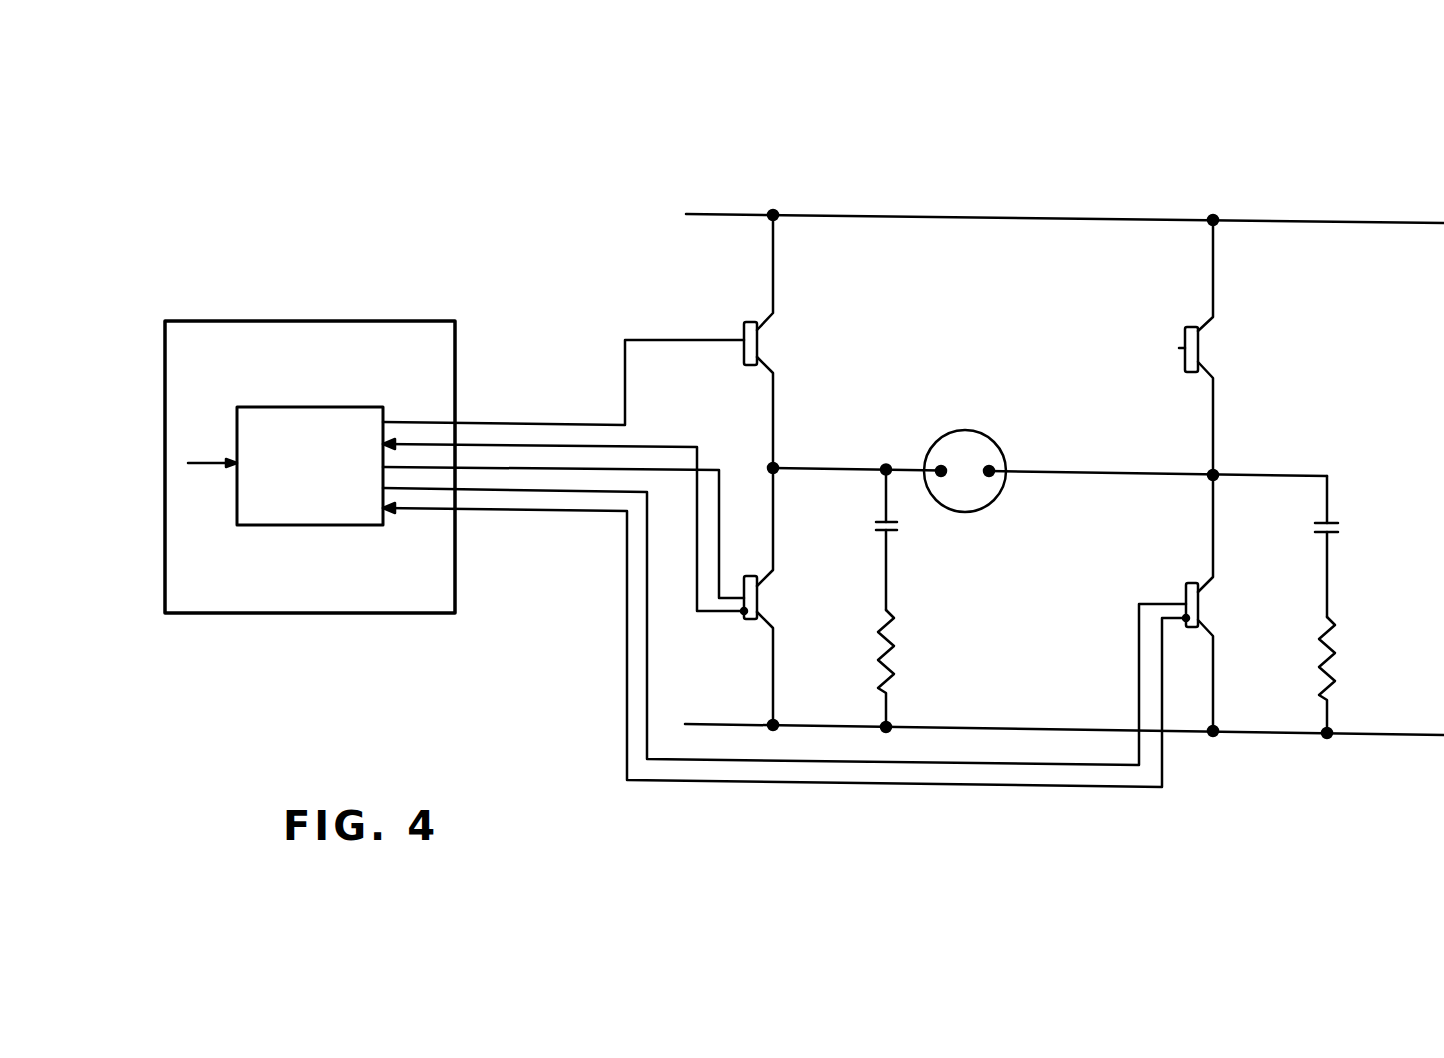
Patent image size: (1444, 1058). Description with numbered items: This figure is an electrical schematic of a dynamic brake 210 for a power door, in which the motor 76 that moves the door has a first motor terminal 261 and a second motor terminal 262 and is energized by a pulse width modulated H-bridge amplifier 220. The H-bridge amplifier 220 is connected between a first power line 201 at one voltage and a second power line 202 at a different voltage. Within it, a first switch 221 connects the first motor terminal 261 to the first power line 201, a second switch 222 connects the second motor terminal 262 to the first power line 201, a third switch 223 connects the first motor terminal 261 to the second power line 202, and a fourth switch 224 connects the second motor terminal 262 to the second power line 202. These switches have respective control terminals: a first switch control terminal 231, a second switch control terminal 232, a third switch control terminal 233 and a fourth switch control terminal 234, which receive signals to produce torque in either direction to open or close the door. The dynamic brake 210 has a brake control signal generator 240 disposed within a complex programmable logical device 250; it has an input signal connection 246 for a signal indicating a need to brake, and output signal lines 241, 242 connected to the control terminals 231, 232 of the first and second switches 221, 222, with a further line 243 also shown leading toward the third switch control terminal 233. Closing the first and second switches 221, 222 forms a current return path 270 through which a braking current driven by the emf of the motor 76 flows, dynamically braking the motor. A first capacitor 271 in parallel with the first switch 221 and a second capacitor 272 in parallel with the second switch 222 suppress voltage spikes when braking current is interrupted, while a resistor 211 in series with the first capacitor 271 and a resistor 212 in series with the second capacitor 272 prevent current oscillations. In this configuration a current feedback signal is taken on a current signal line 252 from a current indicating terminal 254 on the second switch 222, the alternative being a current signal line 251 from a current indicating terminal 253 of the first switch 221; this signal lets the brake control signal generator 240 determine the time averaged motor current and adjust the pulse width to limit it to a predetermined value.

The dynamic brake 210 is at (497, 104).
The H-bridge amplifier 220 is at (1290, 172).
The second power line 202 is at (1162, 218).
The first power line 201 is at (1273, 734).
The motor 76 is at (965, 430).
The first motor terminal 261 is at (941, 477).
The second motor terminal 262 is at (989, 477).
The third switch 223 is at (786, 343).
The fourth switch 224 is at (1226, 348).
The first switch 221 is at (786, 598).
The second switch 222 is at (1226, 604).
The third switch control terminal 233 is at (744, 340).
The fourth switch control terminal 234 is at (1182, 348).
The first switch control terminal 231 is at (744, 598).
The second switch control terminal 232 is at (1186, 604).
The current return path 270 is at (1292, 410).
The first capacitor 271 is at (878, 521).
The second capacitor 272 is at (1320, 522).
The resistor 211 is at (895, 650).
The resistor 212 is at (1334, 655).
The complex programmable logical device 250 is at (378, 321).
The brake control signal generator 240 is at (335, 511).
The input signal connection 246 is at (208, 463).
The output signal line 241 is at (646, 447).
The output signal line 242 is at (647, 740).
The third gate signal line 243 is at (625, 378).
The current signal line 251 is at (692, 585).
The current signal line 252 is at (627, 664).
The current indicating terminal 253 is at (743, 618).
The current indicating terminal 254 is at (1182, 622).